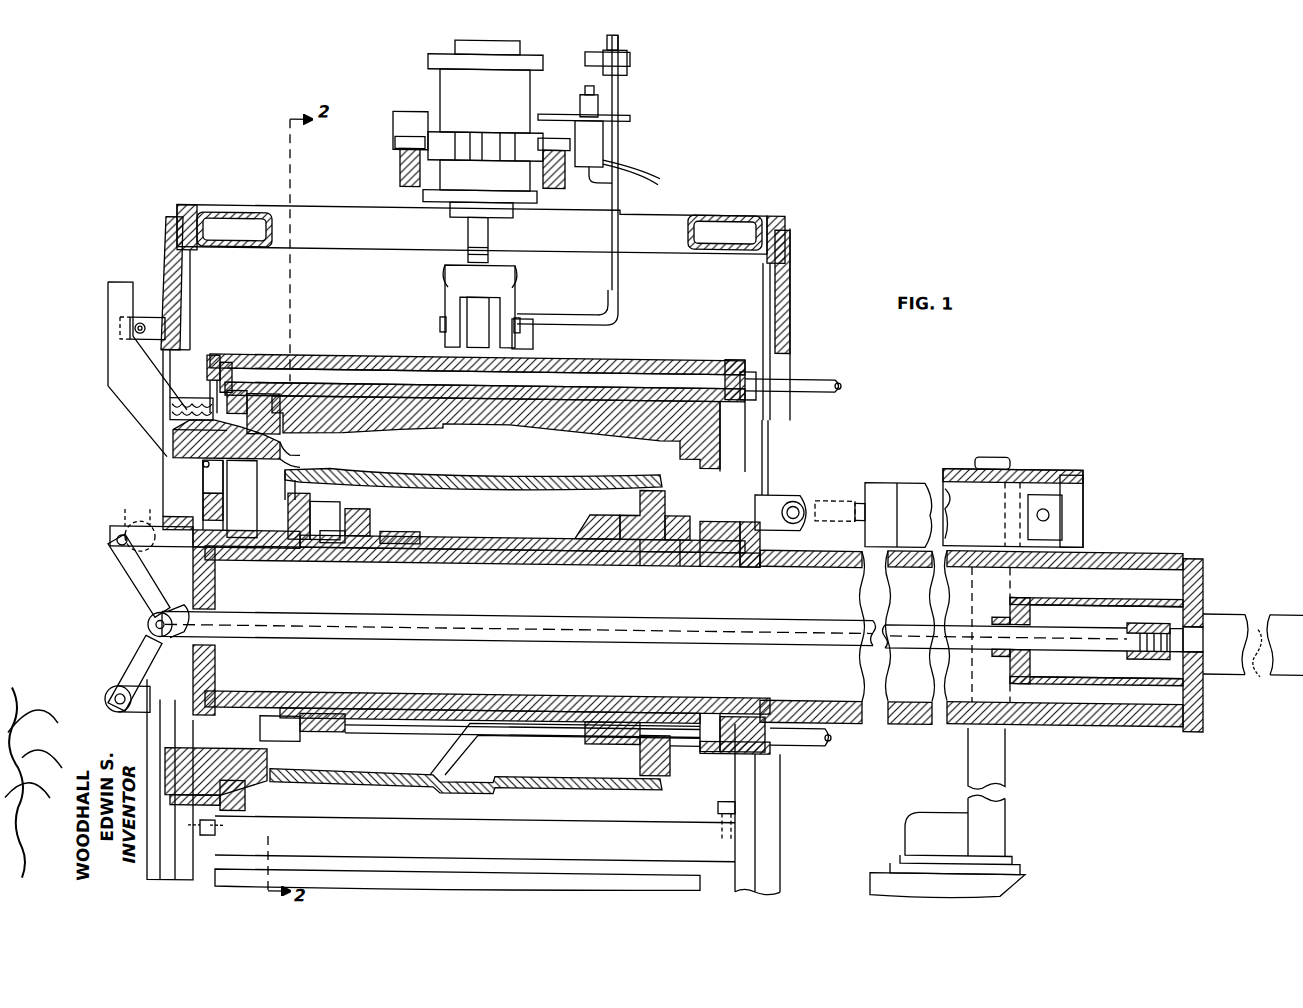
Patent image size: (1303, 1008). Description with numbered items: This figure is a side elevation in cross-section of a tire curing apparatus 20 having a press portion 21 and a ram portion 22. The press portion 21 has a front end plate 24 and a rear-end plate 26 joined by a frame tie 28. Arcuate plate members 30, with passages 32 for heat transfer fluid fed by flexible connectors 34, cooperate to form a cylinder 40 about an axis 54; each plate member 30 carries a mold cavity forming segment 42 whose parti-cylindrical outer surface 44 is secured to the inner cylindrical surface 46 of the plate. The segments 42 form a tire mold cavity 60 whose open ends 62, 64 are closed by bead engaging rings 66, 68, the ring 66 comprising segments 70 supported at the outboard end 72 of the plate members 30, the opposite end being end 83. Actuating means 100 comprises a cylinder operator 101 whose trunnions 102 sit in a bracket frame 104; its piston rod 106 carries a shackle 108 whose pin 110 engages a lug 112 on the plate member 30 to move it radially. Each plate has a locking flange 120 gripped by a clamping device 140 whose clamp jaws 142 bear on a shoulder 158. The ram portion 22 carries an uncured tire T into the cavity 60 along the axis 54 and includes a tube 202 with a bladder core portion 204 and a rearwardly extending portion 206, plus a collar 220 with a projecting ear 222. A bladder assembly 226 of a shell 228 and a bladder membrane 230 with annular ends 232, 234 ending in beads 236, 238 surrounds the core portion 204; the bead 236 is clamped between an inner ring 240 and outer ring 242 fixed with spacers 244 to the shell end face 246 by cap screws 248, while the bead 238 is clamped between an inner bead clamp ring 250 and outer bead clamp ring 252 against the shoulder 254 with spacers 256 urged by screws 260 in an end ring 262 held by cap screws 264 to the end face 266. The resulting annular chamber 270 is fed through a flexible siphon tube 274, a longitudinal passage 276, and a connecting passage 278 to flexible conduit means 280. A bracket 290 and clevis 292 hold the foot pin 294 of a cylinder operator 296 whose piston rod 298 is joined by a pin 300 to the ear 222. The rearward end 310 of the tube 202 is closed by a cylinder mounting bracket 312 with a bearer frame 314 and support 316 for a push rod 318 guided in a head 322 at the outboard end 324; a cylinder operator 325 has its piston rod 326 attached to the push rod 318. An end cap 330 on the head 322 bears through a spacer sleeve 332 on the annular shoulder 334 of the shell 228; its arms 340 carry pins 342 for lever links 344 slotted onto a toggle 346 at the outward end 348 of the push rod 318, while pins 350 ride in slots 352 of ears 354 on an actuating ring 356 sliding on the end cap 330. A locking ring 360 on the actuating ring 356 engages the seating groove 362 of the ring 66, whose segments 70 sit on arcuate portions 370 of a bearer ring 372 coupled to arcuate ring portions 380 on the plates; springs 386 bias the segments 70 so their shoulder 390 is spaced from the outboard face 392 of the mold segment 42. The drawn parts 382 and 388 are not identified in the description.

The apparatus 20 is at (750, 190).
The press portion 21 is at (205, 207).
The ram portion 22 is at (1030, 460).
The front end plate 24 is at (170, 275).
The rear-end plate 26 is at (790, 290).
The frame tie 28 is at (665, 221).
The arcuate plate member 30 is at (582, 359).
The passages 32 is at (632, 385).
The flexible connectors 34 is at (810, 382).
The cylinder 40 is at (363, 421).
The mold cavity forming segment 42 is at (330, 377).
The parti-cylindrical outer surface 44 is at (378, 362).
The inner cylindrical surface 46 is at (418, 400).
The axis 54 is at (795, 619).
The tire mold cavity 60 is at (490, 462).
The open end 62 is at (290, 444).
The open end 64 is at (712, 485).
The bead engaging ring 66 is at (290, 462).
The bead engaging ring 68 is at (670, 515).
The segments 70 is at (180, 452).
The outboard end 72 is at (214, 355).
The end 83 is at (737, 358).
The actuating means 100 is at (432, 88).
The cylinder operator 101 is at (455, 70).
The trunnions 102 is at (410, 128).
The bracket frame 104 is at (400, 168).
The piston rod 106 is at (490, 258).
The shackle 108 is at (455, 300).
The pin 110 is at (445, 330).
The lug 112 is at (498, 325).
The locking flange 120 is at (215, 875).
The clamping device 140 is at (700, 885).
The clamp jaws 142 is at (660, 873).
The shoulder 158 is at (578, 869).
The tube 202 is at (950, 727).
The bladder core portion 204 is at (510, 566).
The rearwardly extending portion 206 is at (1175, 560).
The collar 220 is at (772, 493).
The projecting ear 222 is at (768, 468).
The bladder assembly 226 is at (392, 536).
The shell 228 is at (440, 541).
The bladder membrane 230 is at (500, 483).
The annular end 232 is at (305, 492).
The annular end 234 is at (640, 505).
The circular bead 236 is at (290, 515).
The circular bead 238 is at (620, 518).
The inner ring 240 is at (298, 550).
The outer ring 242 is at (290, 500).
The spacers 244 is at (330, 548).
The shell end face 246 is at (355, 533).
The cap screws 248 is at (382, 548).
The inner bead clamp ring 250 is at (640, 553).
The outer bead clamp ring 252 is at (680, 550).
The shoulder 254 is at (600, 735).
The spacers 256 is at (630, 745).
The screws 260 is at (752, 561).
The end ring 262 is at (735, 715).
The cap screws 264 is at (720, 551).
The end face 266 is at (705, 718).
The annular chamber 270 is at (466, 754).
The flexible siphon tube 274 is at (500, 771).
The longitudinal passage 276 is at (612, 712).
The connecting passage 278 is at (760, 748).
The flexible conduit means 280 is at (830, 740).
The bracket 290 is at (1083, 476).
The clevis 292 is at (1070, 500).
The foot pin 294 is at (1049, 515).
The cylinder operator 296 is at (912, 486).
The piston rod 298 is at (860, 518).
The pin 300 is at (797, 508).
The rearward end 310 is at (1180, 705).
The cylinder mounting bracket 312 is at (1205, 700).
The bearer frame 314 is at (1105, 703).
The support 316 is at (1040, 703).
The push rod 318 is at (525, 642).
The head 322 is at (215, 590).
The outboard end 324 is at (300, 663).
The cylinder operator 325 is at (1277, 610).
The piston rod 326 is at (1185, 635).
The end cap 330 is at (258, 705).
The spacer sleeve 332 is at (340, 701).
The annular shoulder 334 is at (392, 706).
The arms 340 is at (110, 535).
The pin 342 is at (118, 543).
The lever link 344 is at (130, 575).
The toggle 346 is at (150, 628).
The outward end 348 is at (148, 612).
The pin 350 is at (130, 510).
The slot 352 is at (95, 556).
The ears 354 is at (108, 692).
The actuating ring 356 is at (185, 516).
The locking ring 360 is at (203, 500).
The annular seating groove 362 is at (205, 472).
The arcuate portion 370 is at (235, 790).
The bearer ring 372 is at (175, 428).
The arcuate ring portions 380 is at (220, 830).
The ring 382 is at (175, 441).
The springs 386 is at (195, 408).
The spring 388 is at (172, 412).
The shoulder 390 is at (255, 380).
The outboard face 392 is at (298, 395).
The uncured tire T is at (495, 478).